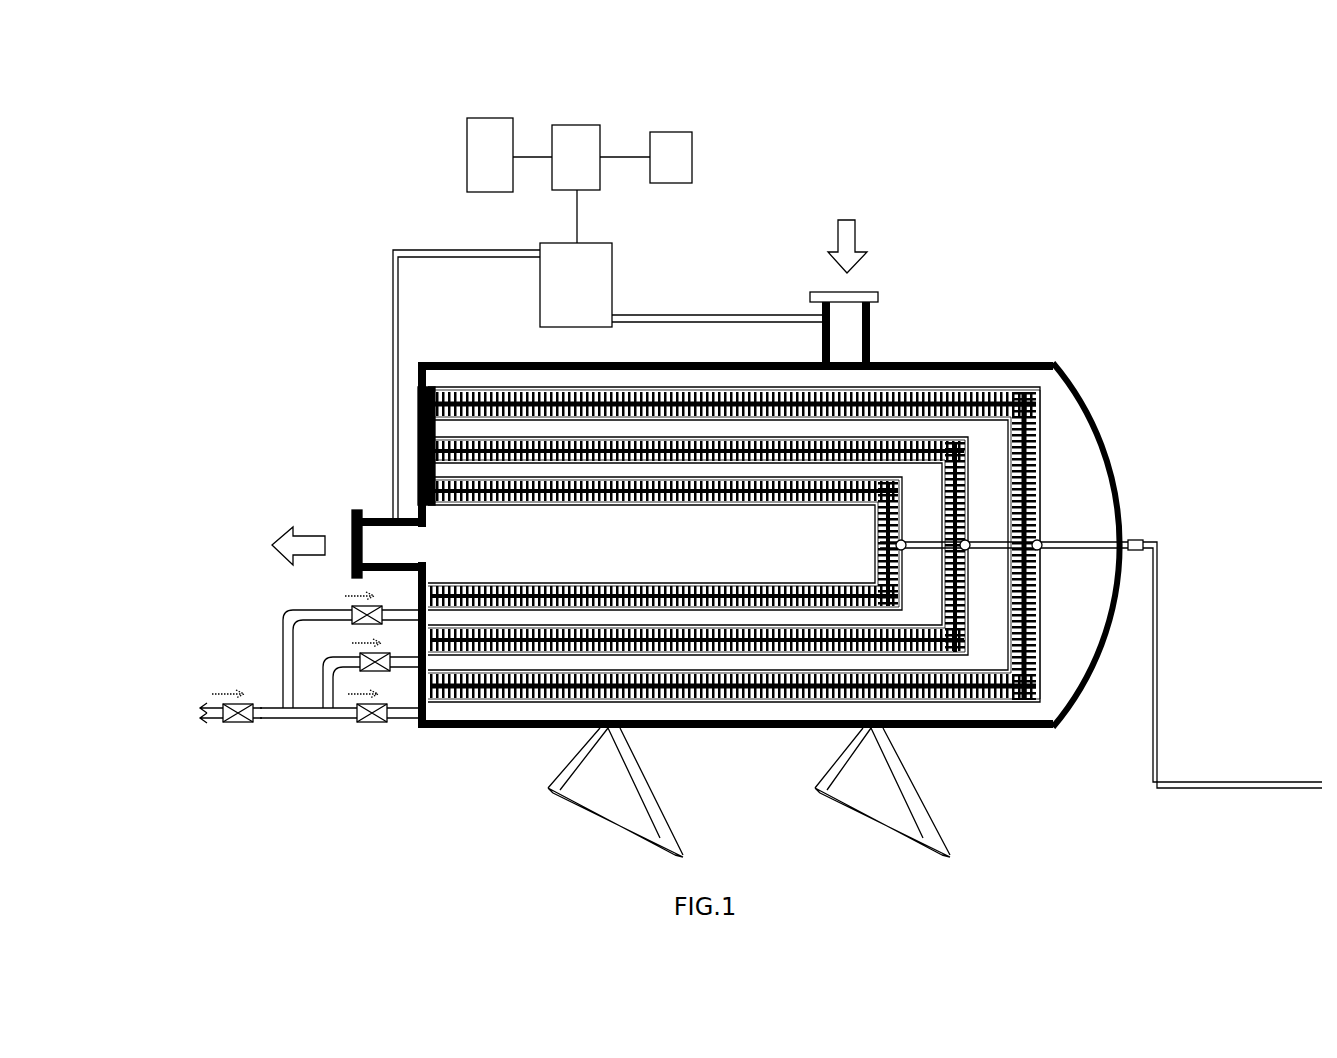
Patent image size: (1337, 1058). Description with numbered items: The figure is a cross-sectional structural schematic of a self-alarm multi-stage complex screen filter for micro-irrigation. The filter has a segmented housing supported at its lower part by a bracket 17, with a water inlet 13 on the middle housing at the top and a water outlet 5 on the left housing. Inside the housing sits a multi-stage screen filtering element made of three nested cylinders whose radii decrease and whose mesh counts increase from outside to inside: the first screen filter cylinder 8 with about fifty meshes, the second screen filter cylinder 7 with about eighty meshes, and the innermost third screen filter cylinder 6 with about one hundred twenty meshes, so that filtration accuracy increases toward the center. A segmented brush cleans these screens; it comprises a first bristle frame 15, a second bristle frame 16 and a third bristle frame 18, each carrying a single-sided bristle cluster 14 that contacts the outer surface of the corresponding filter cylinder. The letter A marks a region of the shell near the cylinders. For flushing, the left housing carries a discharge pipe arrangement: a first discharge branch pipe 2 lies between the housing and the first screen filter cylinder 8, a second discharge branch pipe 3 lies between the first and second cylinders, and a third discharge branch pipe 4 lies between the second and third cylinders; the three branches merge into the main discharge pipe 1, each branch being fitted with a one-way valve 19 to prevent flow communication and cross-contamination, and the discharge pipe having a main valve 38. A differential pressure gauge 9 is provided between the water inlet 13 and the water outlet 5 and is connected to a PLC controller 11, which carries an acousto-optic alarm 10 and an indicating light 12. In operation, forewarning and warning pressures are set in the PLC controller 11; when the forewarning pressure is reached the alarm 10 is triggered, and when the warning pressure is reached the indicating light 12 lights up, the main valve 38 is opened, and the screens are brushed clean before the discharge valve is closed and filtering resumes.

The main discharge pipe 1 is at (260, 705).
The first discharge branch pipe 2 is at (333, 713).
The second discharge branch pipe 3 is at (337, 667).
The third discharge branch pipe 4 is at (327, 608).
The water outlet 5 is at (372, 540).
The third screen filter cylinder 6 is at (417, 487).
The second screen filter cylinder 7 is at (417, 442).
The first screen filter cylinder 8 is at (420, 378).
The shell wall A is at (417, 422).
The differential pressure gauge 9 is at (557, 285).
The alarm 10 is at (488, 150).
The PLC controller 11 is at (577, 147).
The indicating light 12 is at (670, 150).
The water inlet 13 is at (848, 318).
The single-sided bristle cluster 14 is at (978, 692).
The first bristle frame 15 is at (897, 700).
The second bristle frame 16 is at (833, 655).
The bracket 17 is at (587, 753).
The third bristle frame 18 is at (521, 611).
The one-way valve 19 is at (370, 720).
The main valve 38 is at (238, 720).